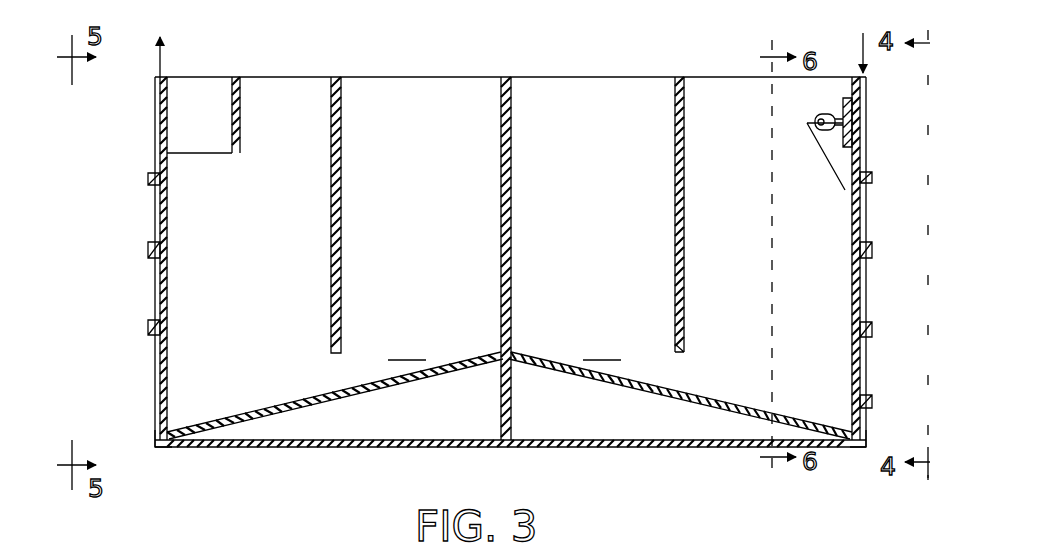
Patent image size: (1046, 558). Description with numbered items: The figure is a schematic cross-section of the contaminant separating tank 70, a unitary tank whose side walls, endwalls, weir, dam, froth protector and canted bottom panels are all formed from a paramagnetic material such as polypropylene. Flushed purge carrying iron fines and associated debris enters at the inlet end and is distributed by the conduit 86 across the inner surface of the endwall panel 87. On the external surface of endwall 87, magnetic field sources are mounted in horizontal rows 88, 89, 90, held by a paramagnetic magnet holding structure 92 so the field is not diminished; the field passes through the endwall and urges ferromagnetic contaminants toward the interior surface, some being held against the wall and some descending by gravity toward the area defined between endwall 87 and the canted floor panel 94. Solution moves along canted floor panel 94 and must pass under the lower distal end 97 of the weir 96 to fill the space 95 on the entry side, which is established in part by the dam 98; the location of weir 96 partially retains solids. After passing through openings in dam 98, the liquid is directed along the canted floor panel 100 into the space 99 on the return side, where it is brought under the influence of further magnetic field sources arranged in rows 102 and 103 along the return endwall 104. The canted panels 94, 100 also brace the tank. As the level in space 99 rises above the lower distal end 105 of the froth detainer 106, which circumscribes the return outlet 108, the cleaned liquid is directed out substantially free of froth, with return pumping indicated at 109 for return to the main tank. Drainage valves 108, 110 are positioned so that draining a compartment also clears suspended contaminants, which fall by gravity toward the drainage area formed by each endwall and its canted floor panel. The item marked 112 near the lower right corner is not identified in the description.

The contaminant separating tank 70 is at (408, 453).
The conduit 86 is at (833, 116).
The endwall panel 87 is at (871, 165).
The horizontal row of magnetic field sources 88 is at (866, 214).
The horizontal row of magnetic field sources 89 is at (866, 296).
The horizontal row of magnetic field sources 90 is at (866, 366).
The magnet holding structure 92 is at (873, 178).
The canted floor panel 94 is at (695, 400).
The space 95 is at (602, 346).
The weir 96 is at (671, 230).
The lower distal end of weir 97 is at (686, 351).
The dam 98 is at (500, 197).
The space 99 is at (407, 346).
The canted floor panel 100 is at (322, 393).
The row of magnetic field sources 102 is at (160, 300).
The row of magnetic field sources 103 is at (160, 222).
The return endwall 104 is at (150, 168).
The lower distal end of froth detainer 105 is at (234, 155).
The froth detainer 106 is at (243, 122).
The return outlet / drainage valve 108 is at (160, 122).
The return pumping 109 is at (161, 45).
The drainage valve 110 is at (160, 436).
The lower right corner 112 is at (868, 432).